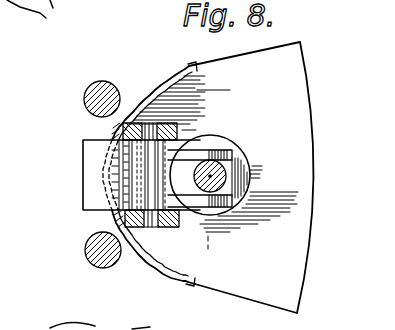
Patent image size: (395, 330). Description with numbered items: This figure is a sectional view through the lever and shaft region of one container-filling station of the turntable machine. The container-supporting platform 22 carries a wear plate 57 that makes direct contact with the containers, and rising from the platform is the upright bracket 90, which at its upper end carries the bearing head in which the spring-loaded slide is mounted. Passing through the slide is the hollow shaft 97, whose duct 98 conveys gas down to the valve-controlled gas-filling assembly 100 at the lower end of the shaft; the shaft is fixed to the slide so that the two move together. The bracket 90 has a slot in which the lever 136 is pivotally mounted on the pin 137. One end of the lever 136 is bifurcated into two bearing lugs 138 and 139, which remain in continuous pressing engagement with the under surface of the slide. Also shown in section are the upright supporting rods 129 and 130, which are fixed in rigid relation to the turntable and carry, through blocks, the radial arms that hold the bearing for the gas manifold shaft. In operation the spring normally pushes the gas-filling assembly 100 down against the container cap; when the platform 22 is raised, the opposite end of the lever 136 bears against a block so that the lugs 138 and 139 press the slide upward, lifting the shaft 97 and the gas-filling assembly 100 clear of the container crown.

The container-supporting platform 22 is at (207, 293).
The wear plate 57 is at (292, 268).
The upright bracket 90 is at (108, 216).
The hollow shaft 97 is at (238, 160).
The duct 98 is at (193, 158).
The valve-controlled gas-filling assembly 100 is at (246, 190).
The upright supporting rod 129 is at (127, 70).
The upright supporting rod 130 is at (110, 268).
The lever 136 is at (97, 173).
The pin 137 is at (150, 226).
The bearing lug 138 is at (216, 166).
The bearing lug 139 is at (222, 216).